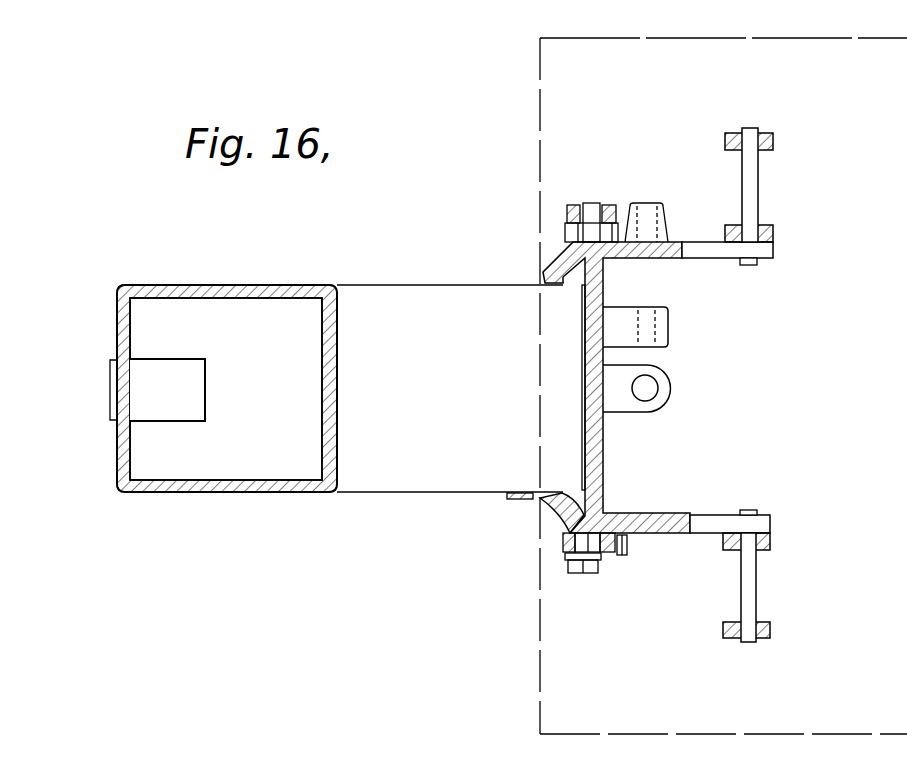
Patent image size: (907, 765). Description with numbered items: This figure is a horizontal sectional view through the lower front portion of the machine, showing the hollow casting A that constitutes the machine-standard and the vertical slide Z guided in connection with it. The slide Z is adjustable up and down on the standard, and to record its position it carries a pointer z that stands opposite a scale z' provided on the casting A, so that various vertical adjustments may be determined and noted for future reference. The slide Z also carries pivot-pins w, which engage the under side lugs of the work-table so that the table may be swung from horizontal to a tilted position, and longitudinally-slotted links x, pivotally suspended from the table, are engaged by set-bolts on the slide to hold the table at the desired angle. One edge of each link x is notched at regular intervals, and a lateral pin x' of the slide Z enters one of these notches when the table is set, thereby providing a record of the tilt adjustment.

The hollow casting A is at (287, 498).
The vertical slide Z is at (598, 470).
The pointer z is at (541, 515).
The scale z' is at (542, 392).
The longitudinally-slotted link x is at (580, 402).
The lateral pin x' is at (641, 371).
The pivot-pin w is at (748, 208).